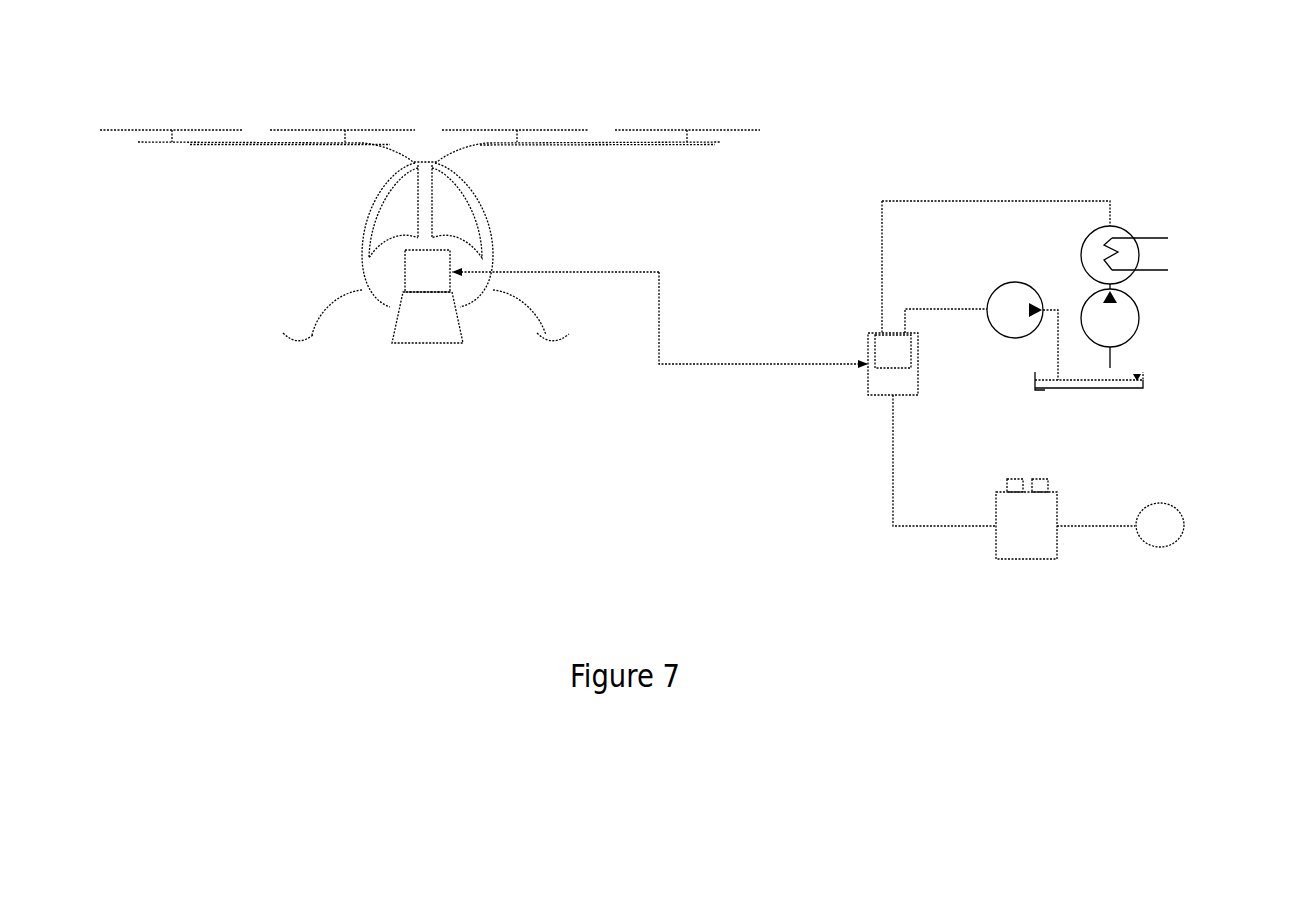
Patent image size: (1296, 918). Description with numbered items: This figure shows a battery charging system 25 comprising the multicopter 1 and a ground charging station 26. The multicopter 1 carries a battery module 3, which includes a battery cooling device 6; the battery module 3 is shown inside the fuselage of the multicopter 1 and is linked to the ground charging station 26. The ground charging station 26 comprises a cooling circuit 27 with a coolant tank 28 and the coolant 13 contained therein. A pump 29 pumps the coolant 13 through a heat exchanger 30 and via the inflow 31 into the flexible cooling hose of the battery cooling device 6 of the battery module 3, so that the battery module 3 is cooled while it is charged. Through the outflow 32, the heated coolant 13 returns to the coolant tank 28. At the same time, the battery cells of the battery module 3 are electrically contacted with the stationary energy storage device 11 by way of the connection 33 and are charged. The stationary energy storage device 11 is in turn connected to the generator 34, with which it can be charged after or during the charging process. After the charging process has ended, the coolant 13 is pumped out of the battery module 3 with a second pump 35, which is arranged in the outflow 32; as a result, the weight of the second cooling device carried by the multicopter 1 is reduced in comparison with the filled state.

The multicopter 1 is at (170, 83).
The battery charging system 25 is at (1174, 58).
The ground charging station 26 is at (1157, 260).
The cooling circuit 27 is at (943, 199).
The coolant tank 28 is at (1147, 385).
The pump 29 is at (1140, 323).
The heat exchanger 30 is at (1140, 258).
The inflow 31 is at (882, 215).
The outflow 32 is at (927, 308).
The connection 33 is at (890, 415).
The generator 34 is at (1178, 508).
The second pump 35 is at (1010, 340).
The battery module 3 is at (866, 343).
The battery cooling device 6 is at (890, 358).
The stationary energy storage device 11 is at (1057, 497).
The coolant 13 is at (1033, 385).